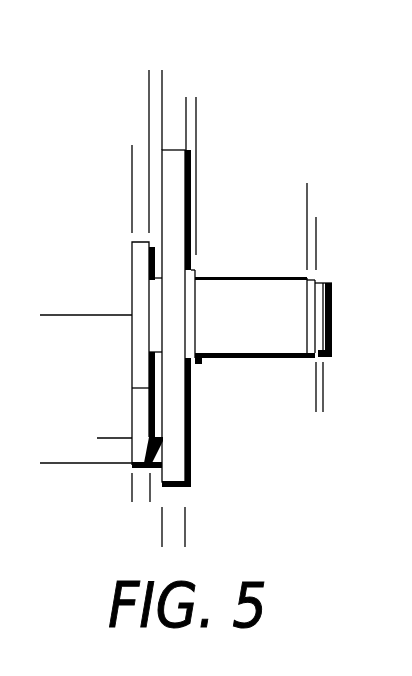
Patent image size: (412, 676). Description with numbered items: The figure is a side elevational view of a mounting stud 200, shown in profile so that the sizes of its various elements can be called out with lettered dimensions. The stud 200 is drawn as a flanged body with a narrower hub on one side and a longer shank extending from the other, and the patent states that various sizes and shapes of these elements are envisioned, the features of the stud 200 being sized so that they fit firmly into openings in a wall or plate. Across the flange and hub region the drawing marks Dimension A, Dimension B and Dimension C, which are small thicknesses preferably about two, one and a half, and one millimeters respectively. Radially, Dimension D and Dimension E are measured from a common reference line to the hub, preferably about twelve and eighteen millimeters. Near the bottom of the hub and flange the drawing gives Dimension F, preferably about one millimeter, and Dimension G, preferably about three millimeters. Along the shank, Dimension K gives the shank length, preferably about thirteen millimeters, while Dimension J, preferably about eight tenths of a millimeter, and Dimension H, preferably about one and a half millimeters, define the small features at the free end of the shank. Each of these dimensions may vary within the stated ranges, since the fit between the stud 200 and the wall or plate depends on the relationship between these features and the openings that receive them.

The stud 200 is at (258, 94).
The Dimension A is at (165, 178).
The Dimension B is at (178, 80).
The Dimension C is at (170, 112).
The Dimension D is at (113, 315).
The Dimension E is at (72, 315).
The Dimension F is at (167, 490).
The Dimension G is at (143, 535).
The Dimension H is at (302, 397).
The Dimension J is at (288, 243).
The Dimension K is at (307, 200).